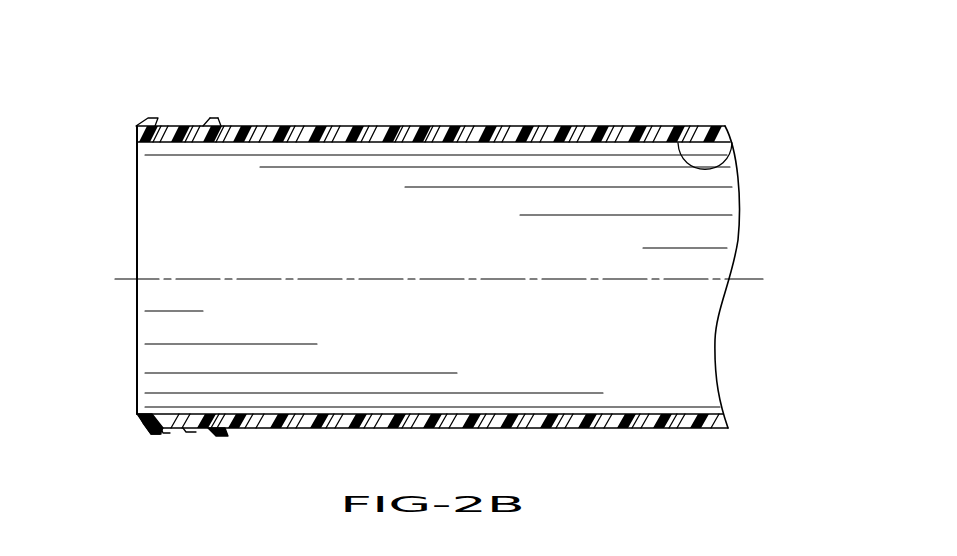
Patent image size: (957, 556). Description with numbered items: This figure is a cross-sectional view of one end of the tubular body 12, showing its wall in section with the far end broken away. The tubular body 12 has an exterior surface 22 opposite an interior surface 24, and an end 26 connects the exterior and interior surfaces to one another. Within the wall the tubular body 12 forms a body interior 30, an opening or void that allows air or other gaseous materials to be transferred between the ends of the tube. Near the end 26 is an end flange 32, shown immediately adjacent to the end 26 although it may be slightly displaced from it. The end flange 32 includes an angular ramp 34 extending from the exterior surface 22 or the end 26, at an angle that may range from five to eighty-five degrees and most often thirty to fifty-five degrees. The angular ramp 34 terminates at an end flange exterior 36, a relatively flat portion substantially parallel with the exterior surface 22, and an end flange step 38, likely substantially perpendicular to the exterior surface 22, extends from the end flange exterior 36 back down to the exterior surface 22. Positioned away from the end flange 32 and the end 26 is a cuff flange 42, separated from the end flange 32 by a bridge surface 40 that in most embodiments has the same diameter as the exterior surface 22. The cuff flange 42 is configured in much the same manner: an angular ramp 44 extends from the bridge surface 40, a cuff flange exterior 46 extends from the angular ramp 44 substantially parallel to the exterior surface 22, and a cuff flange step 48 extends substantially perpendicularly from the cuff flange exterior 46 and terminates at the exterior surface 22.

The tubular body 12 is at (566, 113).
The exterior surface 22 is at (634, 125).
The interior surface 24 is at (718, 167).
The end 26 is at (137, 414).
The body interior 30 is at (607, 247).
The end flange 32 is at (134, 112).
The angular ramp 34 is at (152, 431).
The end flange exterior 36 is at (158, 436).
The end flange step 38 is at (162, 432).
The bridge surface 40 is at (185, 430).
The cuff flange 42 is at (233, 452).
The angular ramp 44 is at (205, 125).
The cuff flange exterior 46 is at (212, 121).
The cuff flange step 48 is at (220, 124).